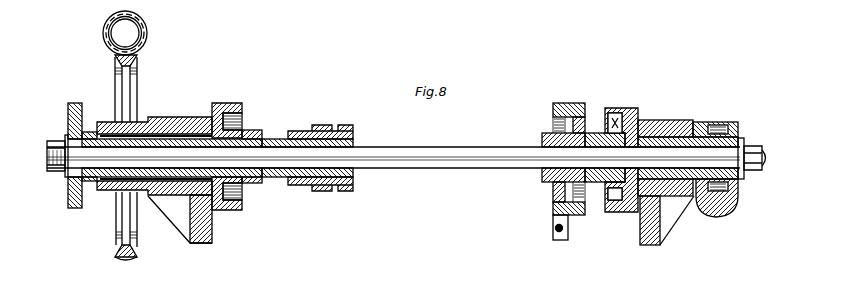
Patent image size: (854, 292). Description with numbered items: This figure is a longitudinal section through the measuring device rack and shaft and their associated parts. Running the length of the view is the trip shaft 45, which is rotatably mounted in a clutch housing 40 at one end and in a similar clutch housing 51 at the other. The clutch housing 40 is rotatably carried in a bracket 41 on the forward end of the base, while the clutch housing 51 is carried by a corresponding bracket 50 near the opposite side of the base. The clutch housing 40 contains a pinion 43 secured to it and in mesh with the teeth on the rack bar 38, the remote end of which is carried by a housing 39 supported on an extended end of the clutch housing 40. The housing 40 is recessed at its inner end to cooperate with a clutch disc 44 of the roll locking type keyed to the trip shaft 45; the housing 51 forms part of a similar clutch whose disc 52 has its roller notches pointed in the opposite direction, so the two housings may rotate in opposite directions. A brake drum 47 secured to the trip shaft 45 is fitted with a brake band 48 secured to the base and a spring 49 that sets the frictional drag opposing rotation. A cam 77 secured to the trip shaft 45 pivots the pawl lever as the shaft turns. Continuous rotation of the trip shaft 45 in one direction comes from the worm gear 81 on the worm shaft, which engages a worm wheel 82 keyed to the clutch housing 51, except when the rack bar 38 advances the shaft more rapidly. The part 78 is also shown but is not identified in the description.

The rack bar 38 is at (738, 190).
The housing 39 is at (708, 212).
The clutch housing 40 is at (651, 120).
The bracket 41 is at (690, 122).
The pinion 43 is at (724, 125).
The clutch disc 44 is at (624, 110).
The trip shaft 45 is at (452, 157).
The brake drum 47 is at (545, 179).
The brake band 48 is at (565, 104).
The spring 49 is at (554, 229).
The bracket 50 is at (178, 118).
The clutch housing 51 is at (222, 104).
The disc 52 is at (243, 122).
The cam 77 is at (68, 107).
The lower arm 78 is at (139, 250).
The worm gear 81 is at (147, 22).
The worm wheel 82 is at (140, 49).